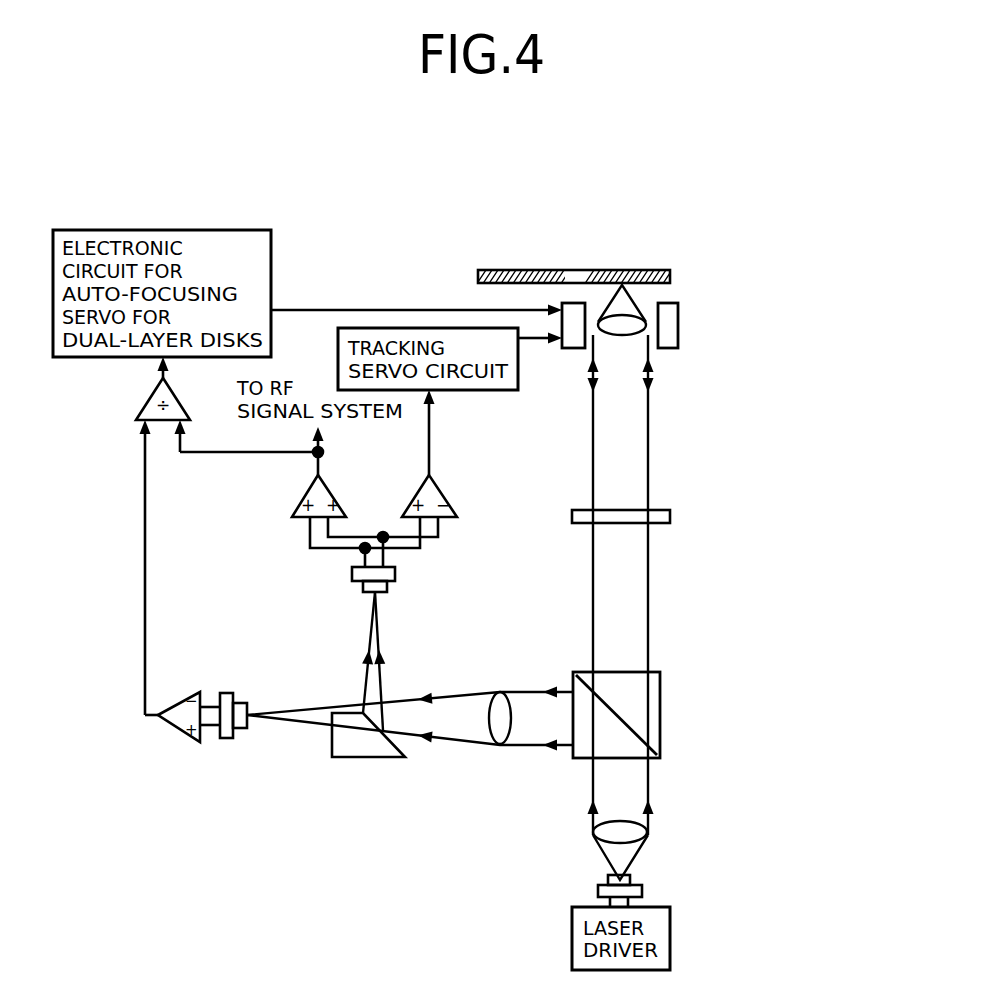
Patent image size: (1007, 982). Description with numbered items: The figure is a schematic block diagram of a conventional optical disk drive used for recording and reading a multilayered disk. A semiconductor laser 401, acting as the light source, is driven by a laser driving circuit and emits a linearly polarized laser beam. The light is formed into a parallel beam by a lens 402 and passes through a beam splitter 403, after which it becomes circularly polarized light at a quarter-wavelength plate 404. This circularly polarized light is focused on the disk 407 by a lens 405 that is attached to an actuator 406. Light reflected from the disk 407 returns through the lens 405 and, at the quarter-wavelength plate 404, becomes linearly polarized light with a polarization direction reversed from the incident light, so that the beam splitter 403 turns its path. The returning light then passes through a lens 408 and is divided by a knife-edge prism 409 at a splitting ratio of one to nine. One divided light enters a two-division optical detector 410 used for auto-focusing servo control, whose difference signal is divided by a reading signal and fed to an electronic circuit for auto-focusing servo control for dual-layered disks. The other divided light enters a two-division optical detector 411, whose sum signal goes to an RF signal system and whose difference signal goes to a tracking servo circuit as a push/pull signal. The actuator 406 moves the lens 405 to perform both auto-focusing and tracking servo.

The semiconductor laser 401 is at (642, 892).
The lens 402 is at (637, 835).
The beam splitter 403 is at (653, 685).
The 1/4λ plate 404 is at (660, 518).
The lens 405 is at (627, 333).
The actuator 406 is at (673, 323).
The disk 407 is at (607, 270).
The lens 408 is at (502, 743).
The knife-edge prism 409 is at (367, 747).
The two-division optical detector 410 is at (227, 740).
The two-division optical detector 411 is at (352, 571).